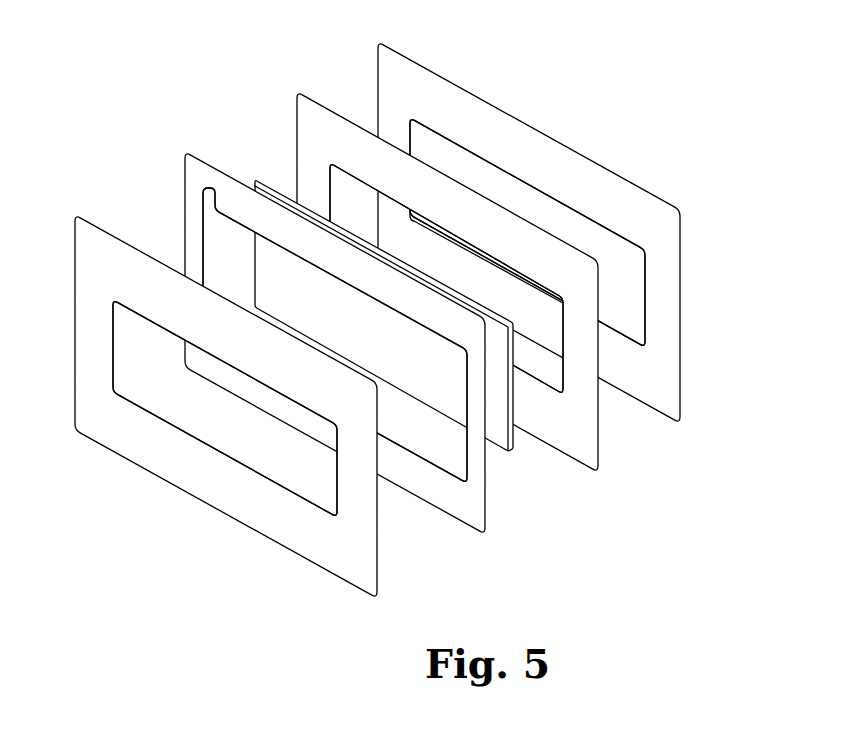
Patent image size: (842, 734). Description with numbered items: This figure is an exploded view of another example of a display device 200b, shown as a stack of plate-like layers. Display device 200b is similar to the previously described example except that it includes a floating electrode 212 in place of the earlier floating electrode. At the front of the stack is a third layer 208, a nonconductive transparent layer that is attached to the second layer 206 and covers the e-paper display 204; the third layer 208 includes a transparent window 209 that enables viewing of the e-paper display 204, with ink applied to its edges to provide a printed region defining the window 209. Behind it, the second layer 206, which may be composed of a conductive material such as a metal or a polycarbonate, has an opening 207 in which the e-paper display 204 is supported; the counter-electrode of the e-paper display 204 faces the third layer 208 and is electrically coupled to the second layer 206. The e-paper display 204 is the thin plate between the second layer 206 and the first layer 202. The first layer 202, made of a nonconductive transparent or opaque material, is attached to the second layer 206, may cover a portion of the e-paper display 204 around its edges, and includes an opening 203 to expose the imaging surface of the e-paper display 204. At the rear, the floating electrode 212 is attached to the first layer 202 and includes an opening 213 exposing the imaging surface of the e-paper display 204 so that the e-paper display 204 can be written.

The display device 200b is at (538, 52).
The first layer 202 is at (598, 445).
The opening 203 is at (551, 378).
The e-paper display 204 is at (500, 435).
The second layer 206 is at (463, 512).
The opening 207 is at (428, 436).
The third layer 208 is at (353, 576).
The transparent window 209 is at (298, 481).
The floating electrode 212 is at (681, 240).
The opening 213 is at (587, 231).